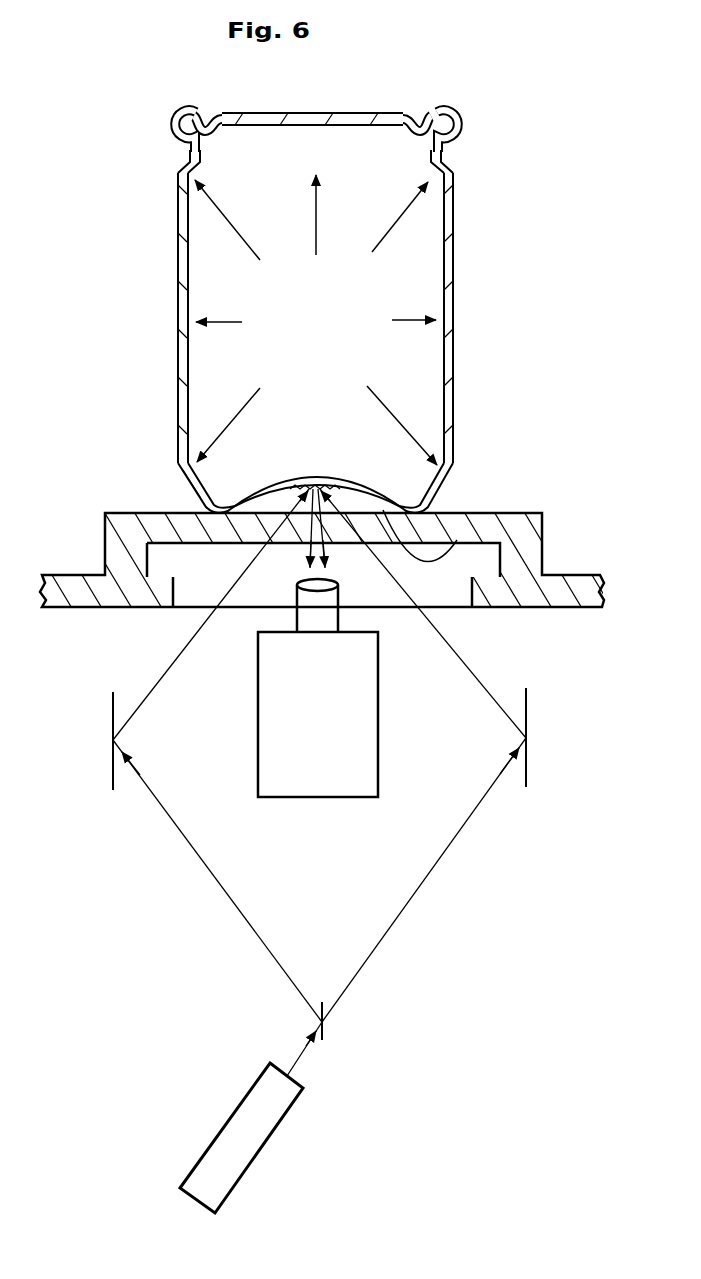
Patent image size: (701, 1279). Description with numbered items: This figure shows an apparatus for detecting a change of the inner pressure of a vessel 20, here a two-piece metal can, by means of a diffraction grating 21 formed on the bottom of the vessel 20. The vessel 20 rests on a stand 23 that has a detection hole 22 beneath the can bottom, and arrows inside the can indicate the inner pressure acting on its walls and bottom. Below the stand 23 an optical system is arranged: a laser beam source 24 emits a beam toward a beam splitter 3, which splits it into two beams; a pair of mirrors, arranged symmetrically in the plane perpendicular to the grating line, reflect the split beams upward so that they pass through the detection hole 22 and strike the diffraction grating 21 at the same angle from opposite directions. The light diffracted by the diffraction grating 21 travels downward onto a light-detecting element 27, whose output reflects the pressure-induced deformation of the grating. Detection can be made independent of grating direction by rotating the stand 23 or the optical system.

The vessel 20 is at (303, 311).
The diffraction grating 21 is at (457, 540).
The detection hole 22 is at (202, 505).
The stand 23 is at (603, 607).
The laser beam source 24 is at (258, 1137).
The light-detecting element 27 is at (320, 780).
The beam splitter 3 is at (325, 1040).